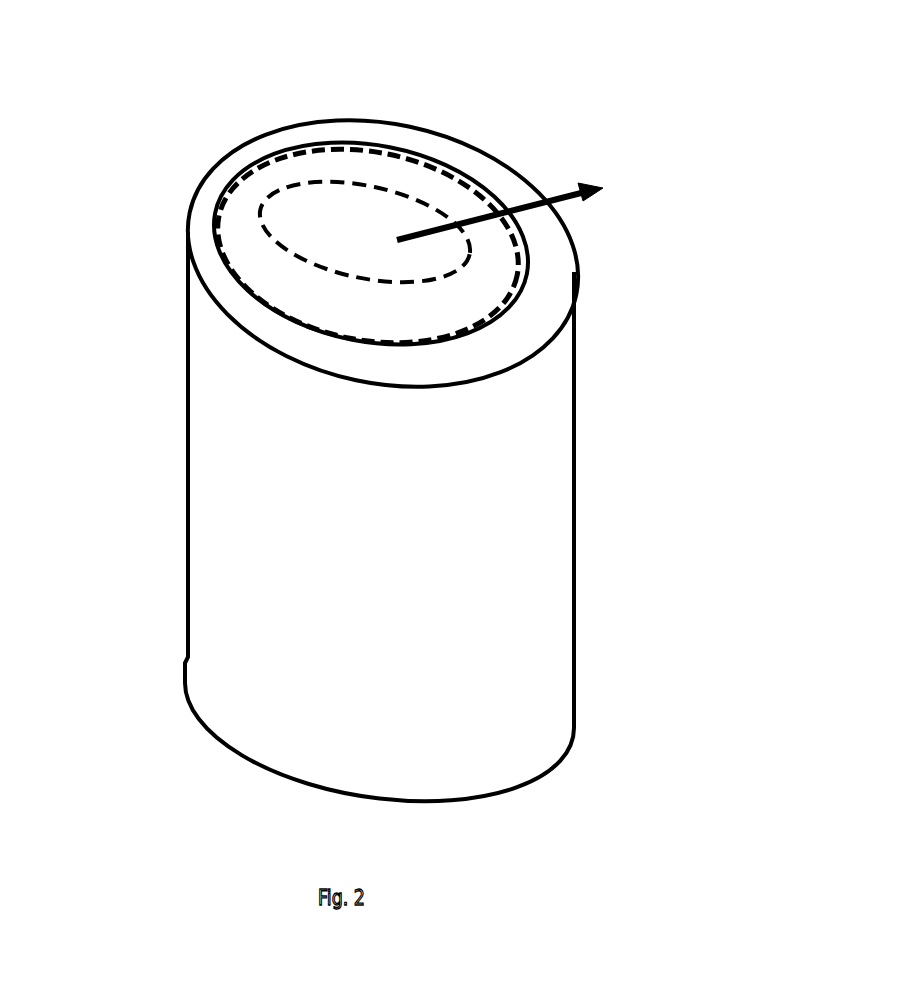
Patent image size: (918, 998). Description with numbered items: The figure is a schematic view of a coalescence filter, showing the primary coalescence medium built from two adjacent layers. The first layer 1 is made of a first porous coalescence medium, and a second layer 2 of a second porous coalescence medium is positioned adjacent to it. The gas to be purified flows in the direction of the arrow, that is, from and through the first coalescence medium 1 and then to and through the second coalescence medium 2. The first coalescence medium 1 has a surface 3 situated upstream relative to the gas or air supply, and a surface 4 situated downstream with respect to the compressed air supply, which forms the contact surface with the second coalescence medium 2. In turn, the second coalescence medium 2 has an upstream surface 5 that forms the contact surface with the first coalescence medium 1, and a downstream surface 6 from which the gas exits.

The first layer of first porous coalescence medium 1 is at (435, 188).
The second layer of second porous coalescence medium 2 is at (547, 305).
The upstream surface of first coalescence medium 3 is at (272, 192).
The downstream surface of first coalescence medium 4 is at (245, 280).
The upstream surface of second coalescence medium 5 is at (530, 252).
The downstream surface of second coalescence medium 6 is at (432, 128).